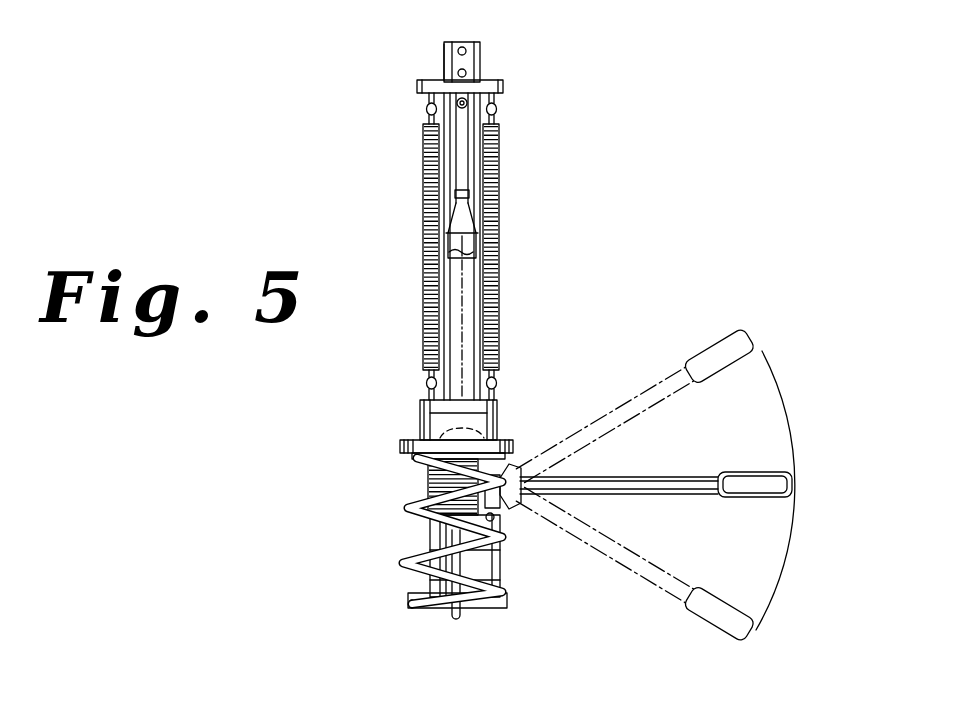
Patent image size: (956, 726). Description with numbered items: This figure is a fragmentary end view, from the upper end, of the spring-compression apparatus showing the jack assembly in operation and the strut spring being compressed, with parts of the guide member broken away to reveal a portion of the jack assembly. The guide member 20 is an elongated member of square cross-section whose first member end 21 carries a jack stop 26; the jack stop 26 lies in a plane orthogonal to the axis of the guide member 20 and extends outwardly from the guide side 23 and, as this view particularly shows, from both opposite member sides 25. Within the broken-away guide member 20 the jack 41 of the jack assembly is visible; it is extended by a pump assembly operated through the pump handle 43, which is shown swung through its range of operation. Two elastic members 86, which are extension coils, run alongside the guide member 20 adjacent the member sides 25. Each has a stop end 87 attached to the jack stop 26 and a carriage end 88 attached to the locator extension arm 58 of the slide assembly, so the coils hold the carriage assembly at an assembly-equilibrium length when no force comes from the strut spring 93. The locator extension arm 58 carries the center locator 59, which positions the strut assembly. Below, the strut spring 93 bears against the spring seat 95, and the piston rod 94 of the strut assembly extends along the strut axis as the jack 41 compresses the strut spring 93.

The guide member 20 is at (463, 310).
The first member end 21 is at (470, 42).
The guide side 23 is at (480, 62).
The member sides 25 is at (444, 63).
The jack stop 26 is at (417, 88).
The jack 41 is at (467, 243).
The pump handle 43 is at (788, 376).
The locator extension arm 58 is at (420, 405).
The center locator 59 is at (430, 422).
The elastic members 86 is at (423, 170).
The stop end 87 is at (426, 109).
The carriage end 88 is at (428, 381).
The strut spring 93 is at (405, 510).
The piston rod 94 is at (456, 622).
The spring seat 95 is at (405, 443).